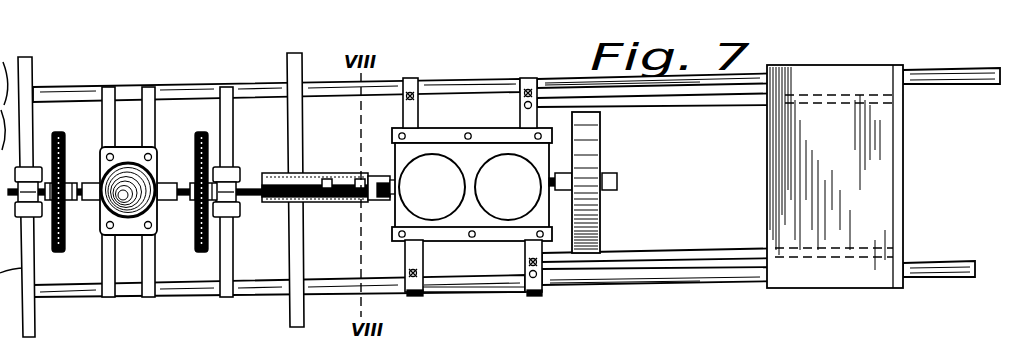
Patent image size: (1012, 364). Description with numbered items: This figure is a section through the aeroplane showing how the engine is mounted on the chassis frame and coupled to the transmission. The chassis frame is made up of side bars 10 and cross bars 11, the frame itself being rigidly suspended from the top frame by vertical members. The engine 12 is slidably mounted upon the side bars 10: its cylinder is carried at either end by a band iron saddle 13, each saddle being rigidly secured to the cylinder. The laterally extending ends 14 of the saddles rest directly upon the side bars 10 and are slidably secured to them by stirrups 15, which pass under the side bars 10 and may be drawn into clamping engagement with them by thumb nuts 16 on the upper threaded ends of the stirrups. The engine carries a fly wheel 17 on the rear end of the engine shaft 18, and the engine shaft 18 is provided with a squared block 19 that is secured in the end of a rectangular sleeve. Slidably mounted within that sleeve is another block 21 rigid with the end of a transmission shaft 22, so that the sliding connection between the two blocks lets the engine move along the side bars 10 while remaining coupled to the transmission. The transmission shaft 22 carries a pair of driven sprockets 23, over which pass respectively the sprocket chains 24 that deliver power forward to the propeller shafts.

The side bars 10 is at (57, 88).
The cross bars 11 is at (293, 253).
The engine 12 is at (472, 184).
The band iron saddle 13 is at (530, 248).
The laterally extending ends 14 is at (527, 288).
The stirrups 15 is at (409, 297).
The thumb nuts 16 is at (411, 271).
The fly wheel 17 is at (590, 153).
The engine shaft 18 is at (364, 199).
The squared block 19 is at (361, 174).
The block 21 is at (330, 173).
The transmission shaft 22 is at (255, 187).
The driven sprockets 23 is at (64, 167).
The sprocket chains 24 is at (63, 250).